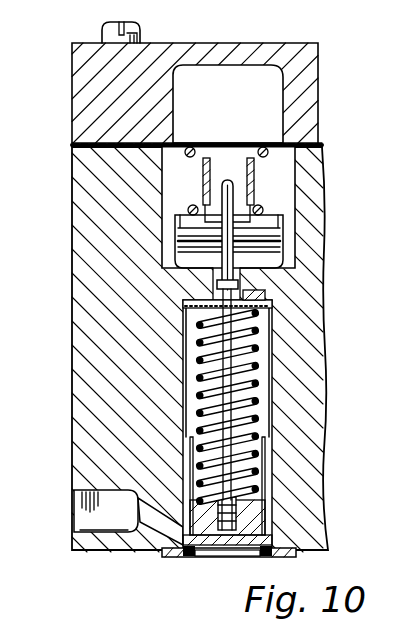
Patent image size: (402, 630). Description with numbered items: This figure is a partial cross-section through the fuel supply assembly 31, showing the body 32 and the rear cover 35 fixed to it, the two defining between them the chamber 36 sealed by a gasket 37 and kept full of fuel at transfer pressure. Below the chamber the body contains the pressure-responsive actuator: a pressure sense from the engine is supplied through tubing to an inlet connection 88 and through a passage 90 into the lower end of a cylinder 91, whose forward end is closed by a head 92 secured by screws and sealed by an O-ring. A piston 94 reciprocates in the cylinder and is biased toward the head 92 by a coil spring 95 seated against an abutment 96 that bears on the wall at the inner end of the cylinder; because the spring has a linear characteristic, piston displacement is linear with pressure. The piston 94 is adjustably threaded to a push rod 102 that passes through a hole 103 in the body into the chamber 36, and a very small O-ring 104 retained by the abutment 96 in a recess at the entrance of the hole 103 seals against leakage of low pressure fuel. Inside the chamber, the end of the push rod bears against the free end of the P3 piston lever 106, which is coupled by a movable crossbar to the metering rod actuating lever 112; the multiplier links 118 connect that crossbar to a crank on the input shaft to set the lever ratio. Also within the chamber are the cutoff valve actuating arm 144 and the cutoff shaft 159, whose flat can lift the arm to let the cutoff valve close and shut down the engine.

The fuel supply assembly 31 is at (72, 243).
The body 32 is at (82, 387).
The rear cover 35 is at (88, 83).
The chamber 36 is at (213, 75).
The gasket 37 is at (322, 145).
The inlet connection 88 is at (92, 518).
The passage 90 is at (165, 525).
The cylinder 91 is at (265, 392).
The head 92 is at (240, 545).
The piston 94 is at (272, 521).
The coil spring 95 is at (268, 330).
The abutment 96 is at (187, 312).
The push rod 102 is at (258, 360).
The hole 103 is at (263, 298).
The O-ring 104 is at (268, 305).
The P3 piston lever 106 is at (216, 270).
The metering rod actuating lever 112 is at (250, 143).
The multiplier links 118 is at (259, 206).
The cutoff valve actuating arm 144 is at (203, 176).
The cutoff shaft 159 is at (182, 237).